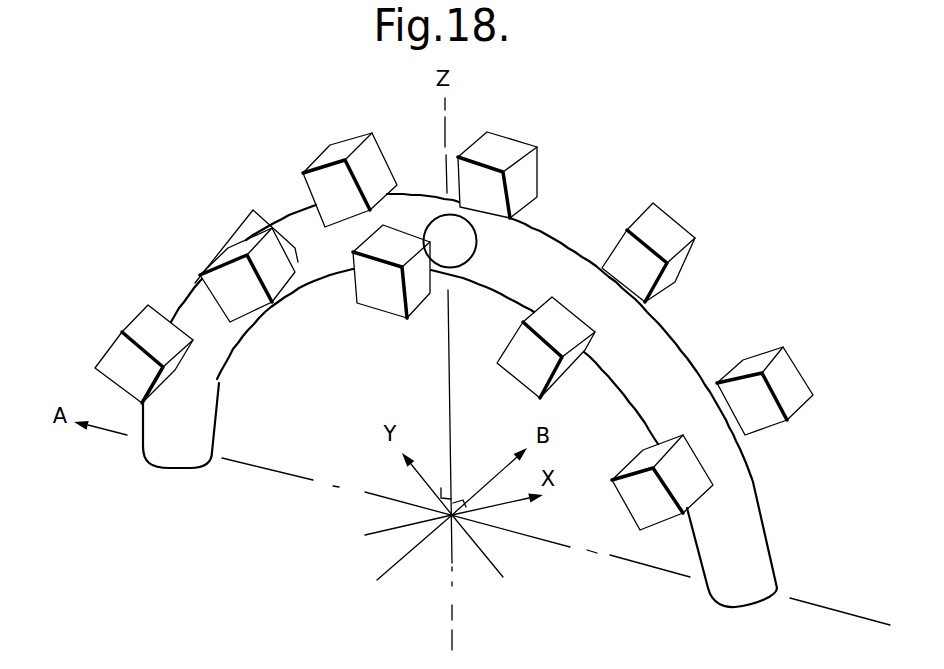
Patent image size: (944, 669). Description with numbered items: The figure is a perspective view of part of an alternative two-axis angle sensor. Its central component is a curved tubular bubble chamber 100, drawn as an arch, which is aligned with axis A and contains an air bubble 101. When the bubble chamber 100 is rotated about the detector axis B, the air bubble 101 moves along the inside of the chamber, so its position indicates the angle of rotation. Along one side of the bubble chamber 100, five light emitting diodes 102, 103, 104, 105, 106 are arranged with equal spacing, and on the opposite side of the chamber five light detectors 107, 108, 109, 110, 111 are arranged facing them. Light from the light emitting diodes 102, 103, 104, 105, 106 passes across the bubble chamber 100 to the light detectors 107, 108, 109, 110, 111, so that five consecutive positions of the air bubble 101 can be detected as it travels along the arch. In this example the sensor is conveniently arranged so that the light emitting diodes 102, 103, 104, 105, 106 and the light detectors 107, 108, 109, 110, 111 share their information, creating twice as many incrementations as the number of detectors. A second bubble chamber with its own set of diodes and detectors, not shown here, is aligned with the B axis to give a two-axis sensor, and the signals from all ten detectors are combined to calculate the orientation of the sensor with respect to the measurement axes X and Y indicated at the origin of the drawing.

The bubble chamber 100 is at (710, 586).
The air bubble 101 is at (467, 252).
The light emitting diode 102 is at (135, 330).
The light emitting diode 103 is at (275, 293).
The light emitting diode 104 is at (380, 303).
The light emitting diode 105 is at (523, 377).
The light emitting diode 106 is at (615, 471).
The light detector 107 is at (243, 222).
The light detector 108 is at (330, 145).
The light detector 109 is at (518, 145).
The light detector 110 is at (668, 235).
The light detector 111 is at (793, 363).